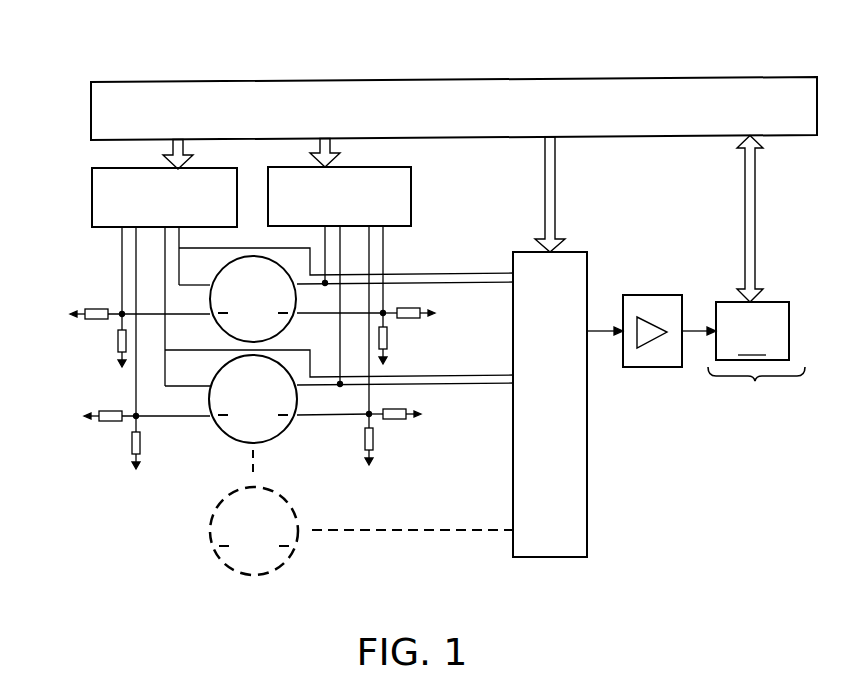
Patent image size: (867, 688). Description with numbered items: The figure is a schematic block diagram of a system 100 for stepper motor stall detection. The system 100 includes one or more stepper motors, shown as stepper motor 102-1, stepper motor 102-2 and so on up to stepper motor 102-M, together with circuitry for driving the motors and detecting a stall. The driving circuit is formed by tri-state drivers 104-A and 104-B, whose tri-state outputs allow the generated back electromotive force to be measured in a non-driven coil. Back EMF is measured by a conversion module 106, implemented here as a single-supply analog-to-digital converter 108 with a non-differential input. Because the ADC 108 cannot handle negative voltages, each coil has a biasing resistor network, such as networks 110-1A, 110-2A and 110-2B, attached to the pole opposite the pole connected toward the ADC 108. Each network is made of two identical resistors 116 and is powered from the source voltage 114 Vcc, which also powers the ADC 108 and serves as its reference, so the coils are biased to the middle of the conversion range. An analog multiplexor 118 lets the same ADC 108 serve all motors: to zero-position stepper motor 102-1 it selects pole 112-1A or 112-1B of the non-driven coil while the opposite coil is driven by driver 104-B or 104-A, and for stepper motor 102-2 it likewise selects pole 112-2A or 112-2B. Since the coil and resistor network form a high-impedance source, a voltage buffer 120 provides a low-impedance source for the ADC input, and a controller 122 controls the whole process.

The system for stepper motor stall detection 100 is at (130, 62).
The stepper motor 102-1 is at (231, 308).
The stepper motor 102-2 is at (231, 408).
The stepper motor 102-M is at (229, 540).
The tri-state driver 104-A is at (92, 197).
The tri-state driver 104-B is at (411, 193).
The conversion module 106 is at (756, 386).
The analog-to-digital converter 108 is at (735, 302).
The biasing resistor network 110-1A is at (122, 315).
The biasing resistor network 110-2A is at (385, 313).
The biasing resistor network 110-2B is at (136, 416).
The pole 112-1A is at (208, 286).
The pole 112-1B is at (298, 286).
The pole 112-2A is at (208, 387).
The pole 112-2B is at (298, 387).
The source voltage Vcc 114 is at (49, 302).
The resistor 116 is at (96, 296).
The analog multiplexor 118 is at (536, 431).
The voltage buffer 120 is at (648, 367).
The controller 122 is at (439, 132).